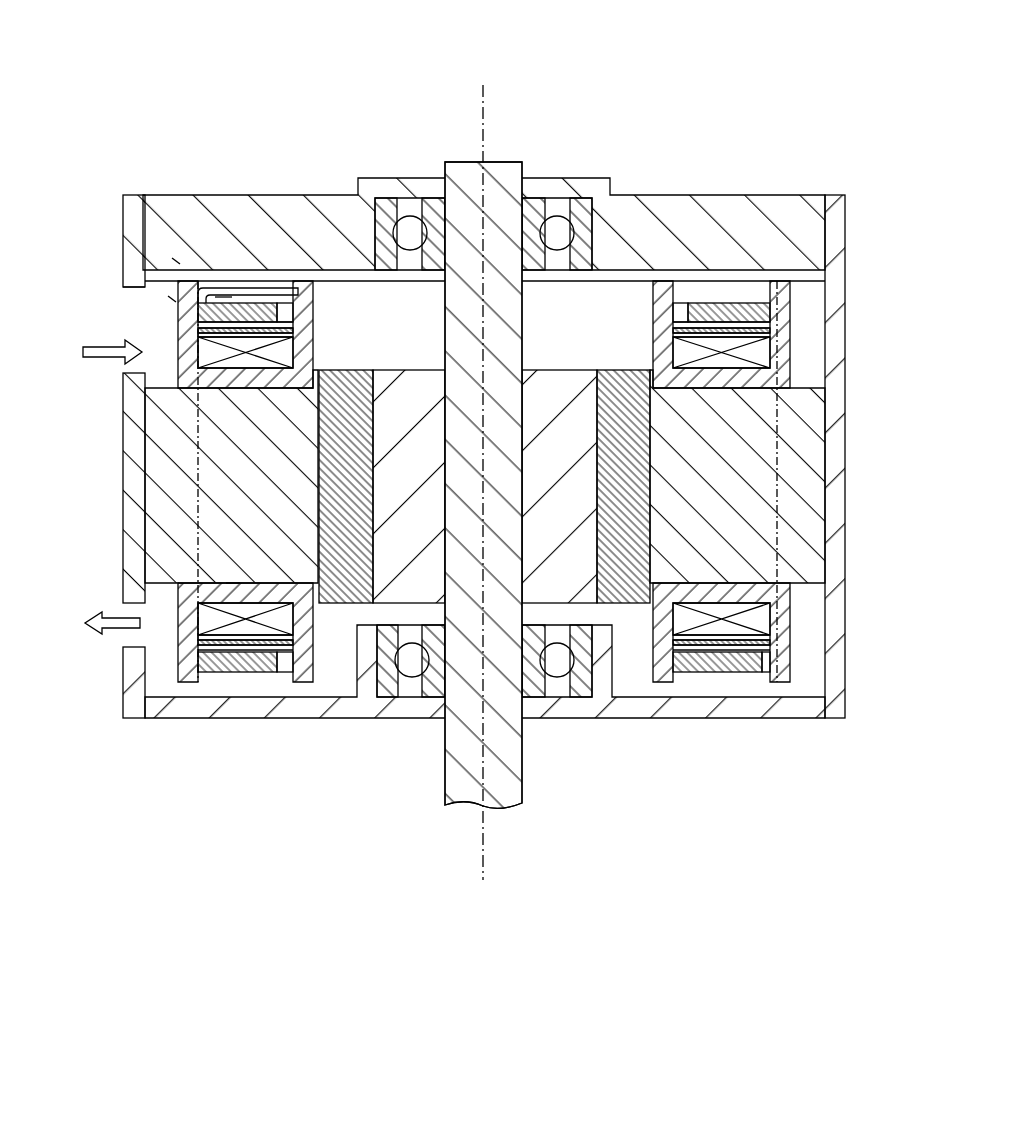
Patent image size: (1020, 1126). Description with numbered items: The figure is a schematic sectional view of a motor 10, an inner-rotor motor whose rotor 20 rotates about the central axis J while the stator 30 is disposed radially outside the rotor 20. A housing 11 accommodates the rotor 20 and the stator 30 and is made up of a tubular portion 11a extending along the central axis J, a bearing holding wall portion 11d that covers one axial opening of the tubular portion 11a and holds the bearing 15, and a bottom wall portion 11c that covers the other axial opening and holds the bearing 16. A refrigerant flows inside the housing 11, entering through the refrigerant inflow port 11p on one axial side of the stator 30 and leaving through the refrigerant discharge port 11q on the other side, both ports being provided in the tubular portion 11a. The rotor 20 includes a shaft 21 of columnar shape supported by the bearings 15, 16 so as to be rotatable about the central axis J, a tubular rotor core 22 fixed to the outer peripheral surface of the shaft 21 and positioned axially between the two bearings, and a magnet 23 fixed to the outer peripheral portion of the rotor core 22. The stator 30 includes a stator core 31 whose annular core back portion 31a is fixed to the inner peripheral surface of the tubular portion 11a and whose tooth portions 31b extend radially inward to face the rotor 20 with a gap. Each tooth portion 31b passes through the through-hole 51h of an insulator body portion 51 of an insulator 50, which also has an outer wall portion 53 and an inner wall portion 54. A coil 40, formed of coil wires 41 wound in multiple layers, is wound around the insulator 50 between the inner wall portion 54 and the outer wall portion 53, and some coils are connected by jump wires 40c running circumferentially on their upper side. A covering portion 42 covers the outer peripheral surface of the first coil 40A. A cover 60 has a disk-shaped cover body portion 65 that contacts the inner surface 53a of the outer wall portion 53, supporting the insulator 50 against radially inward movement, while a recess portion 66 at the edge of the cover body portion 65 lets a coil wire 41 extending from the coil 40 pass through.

The motor 10 is at (761, 138).
The housing 11 is at (837, 186).
The tubular portion 11a is at (832, 623).
The bottom wall portion 11c is at (722, 708).
The bearing holding wall portion 11d is at (262, 225).
The refrigerant inflow port 11p is at (132, 288).
The refrigerant discharge port 11q is at (130, 648).
The bearing 15 is at (407, 215).
The bearing 16 is at (412, 670).
The rotor 20 is at (608, 352).
The shaft 21 is at (518, 745).
The rotor core 22 is at (562, 518).
The magnet 23 is at (628, 485).
The stator 30 is at (812, 340).
The stator core 31 is at (835, 450).
The core back portion 31a is at (165, 490).
The tooth portion 31b is at (245, 483).
The coil 40 is at (735, 352).
The first coil 40A is at (722, 340).
The jump wire 40c is at (223, 286).
The coil wire 41 is at (128, 200).
The covering portion 42 is at (270, 328).
The insulator 50 is at (804, 368).
The insulator body portion 51 is at (718, 386).
The through-hole 51h is at (232, 580).
The outer wall portion 53 is at (742, 322).
The inner surface 53a is at (205, 290).
The inner wall portion 54 is at (665, 300).
The cover 60 is at (212, 280).
The cover body portion 65 is at (170, 298).
The recess portion 66 is at (176, 262).
The central axis J is at (483, 103).